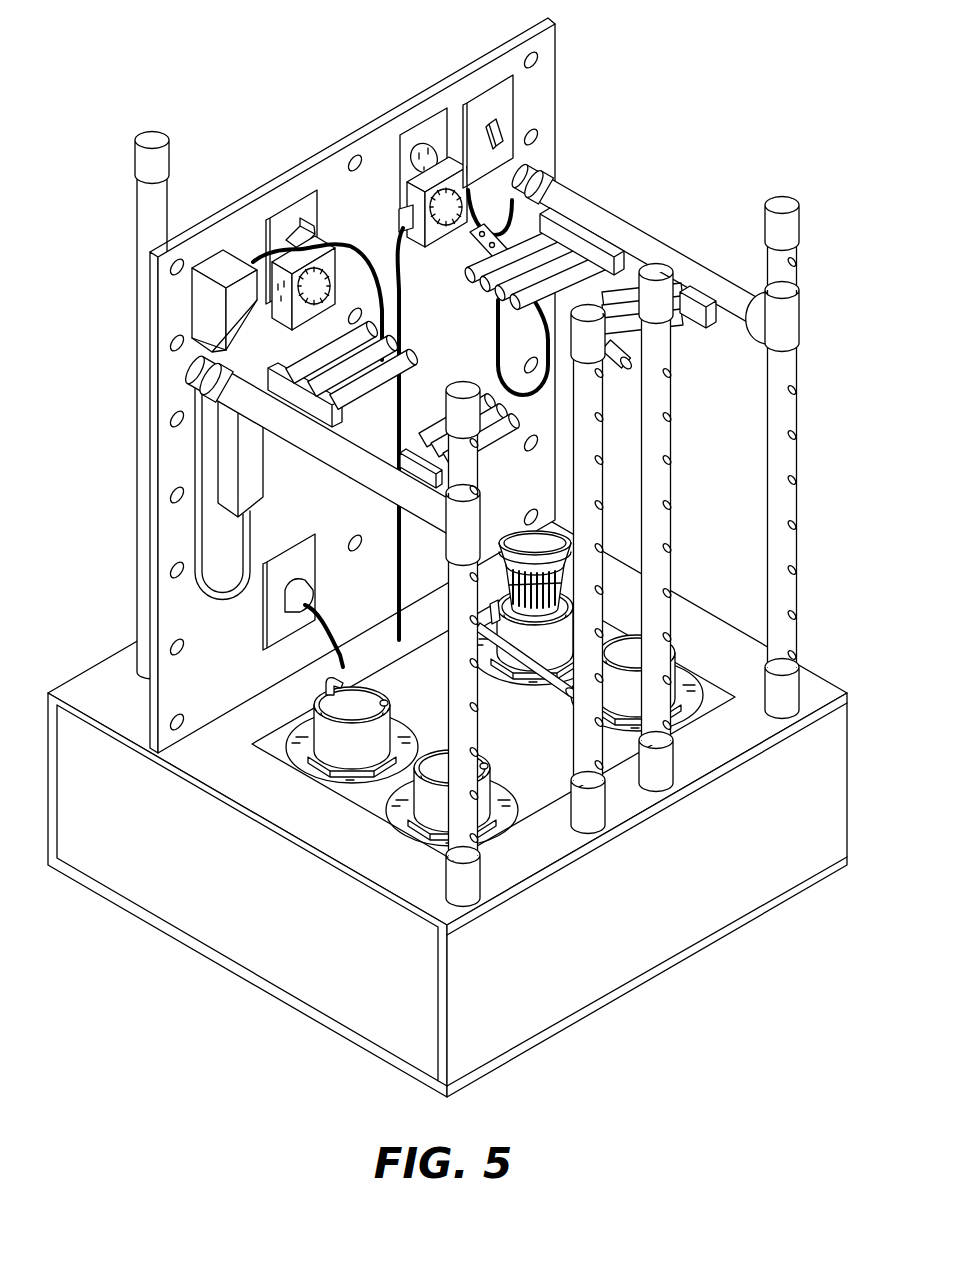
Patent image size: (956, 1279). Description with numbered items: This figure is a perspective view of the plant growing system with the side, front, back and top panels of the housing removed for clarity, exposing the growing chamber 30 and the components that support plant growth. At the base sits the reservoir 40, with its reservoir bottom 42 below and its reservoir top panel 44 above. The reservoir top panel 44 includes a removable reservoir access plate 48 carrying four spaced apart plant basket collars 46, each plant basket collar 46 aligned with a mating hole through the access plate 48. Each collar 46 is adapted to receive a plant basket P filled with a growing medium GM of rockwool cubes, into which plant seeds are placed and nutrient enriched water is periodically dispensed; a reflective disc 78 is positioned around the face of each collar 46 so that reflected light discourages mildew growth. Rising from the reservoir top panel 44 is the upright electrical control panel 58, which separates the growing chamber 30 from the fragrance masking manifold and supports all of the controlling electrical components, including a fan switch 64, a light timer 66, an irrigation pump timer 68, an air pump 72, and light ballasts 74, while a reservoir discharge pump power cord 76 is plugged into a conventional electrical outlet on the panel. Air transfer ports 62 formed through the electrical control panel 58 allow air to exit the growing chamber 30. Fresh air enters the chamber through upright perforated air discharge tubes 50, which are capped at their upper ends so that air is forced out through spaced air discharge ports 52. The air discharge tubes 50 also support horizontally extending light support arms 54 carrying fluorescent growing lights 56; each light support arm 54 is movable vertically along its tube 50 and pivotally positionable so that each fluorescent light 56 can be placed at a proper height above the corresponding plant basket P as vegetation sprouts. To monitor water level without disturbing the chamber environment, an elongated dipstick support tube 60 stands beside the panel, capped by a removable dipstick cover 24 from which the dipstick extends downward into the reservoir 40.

The dipstick cover 24 is at (134, 148).
The growing chamber 30 is at (480, 533).
The reservoir 40 is at (447, 779).
The reservoir bottom 42 is at (652, 982).
The reservoir top panel 44 is at (393, 856).
The plant basket collar 46 is at (314, 739).
The reservoir access plate 48 is at (473, 663).
The perforated air discharge tube 50 is at (795, 458).
The air discharge port 52 is at (797, 522).
The light support arm 54 is at (657, 248).
The fluorescent growing light 56 is at (556, 266).
The electrical control panel 58 is at (320, 385).
The dipstick support tube 60 is at (114, 406).
The air transfer port 62 is at (173, 572).
The fan switch 64 is at (495, 142).
The light timer 66 is at (443, 168).
The irrigation pump timer 68 is at (327, 240).
The air pump 72 is at (228, 267).
The light ballast 74 is at (219, 447).
The reservoir discharge pump power cord 76 is at (283, 614).
The reflective disc 78 is at (302, 722).
The plant basket P is at (605, 541).
The growing medium GM is at (560, 592).